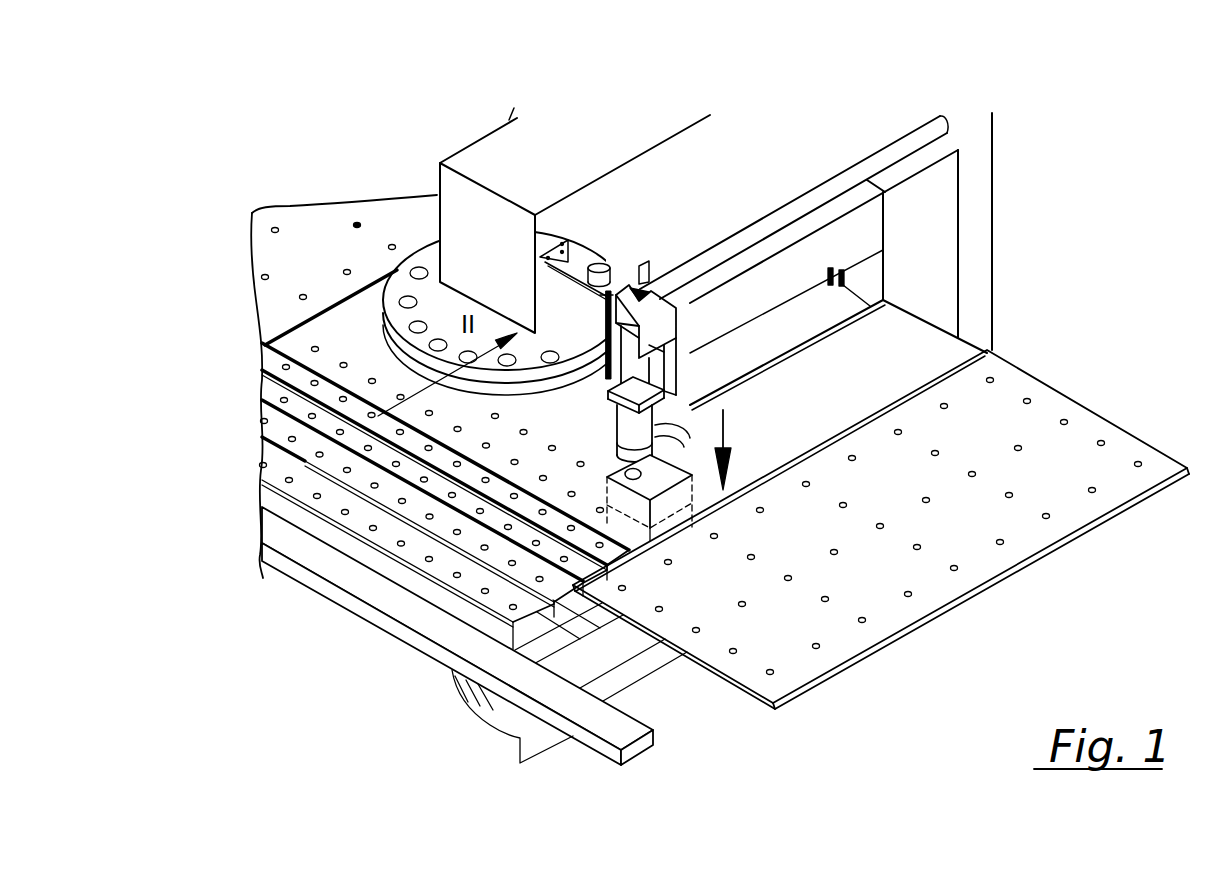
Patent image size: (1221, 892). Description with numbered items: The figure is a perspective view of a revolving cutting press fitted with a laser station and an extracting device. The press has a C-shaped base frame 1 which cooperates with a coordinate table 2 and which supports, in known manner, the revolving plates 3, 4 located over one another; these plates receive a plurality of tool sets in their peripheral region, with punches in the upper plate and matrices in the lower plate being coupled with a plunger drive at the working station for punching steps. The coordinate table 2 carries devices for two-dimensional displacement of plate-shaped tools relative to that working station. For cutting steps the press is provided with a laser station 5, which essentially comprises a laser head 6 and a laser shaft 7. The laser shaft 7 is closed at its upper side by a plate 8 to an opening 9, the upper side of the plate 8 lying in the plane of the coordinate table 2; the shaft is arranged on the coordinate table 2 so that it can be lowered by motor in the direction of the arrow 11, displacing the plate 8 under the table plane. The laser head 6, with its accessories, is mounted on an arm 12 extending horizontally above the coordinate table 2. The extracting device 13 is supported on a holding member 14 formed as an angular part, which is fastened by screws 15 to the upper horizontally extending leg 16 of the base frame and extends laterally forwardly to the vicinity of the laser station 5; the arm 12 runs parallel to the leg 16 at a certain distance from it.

The C-shaped base frame 1 is at (672, 200).
The coordinate table 2 is at (1037, 413).
The revolving plate 3 is at (400, 318).
The revolving plate 4 is at (432, 378).
The laser station 5 is at (633, 433).
The laser head 6 is at (540, 478).
The laser shaft 7 is at (670, 503).
The plate 8 is at (657, 473).
The opening 9 is at (657, 475).
The arrow 11 is at (710, 450).
The arm 12 is at (813, 252).
The extracting device 13 is at (616, 255).
The holding member 14 is at (550, 302).
The screws 15 is at (560, 247).
The leg 16 is at (507, 120).